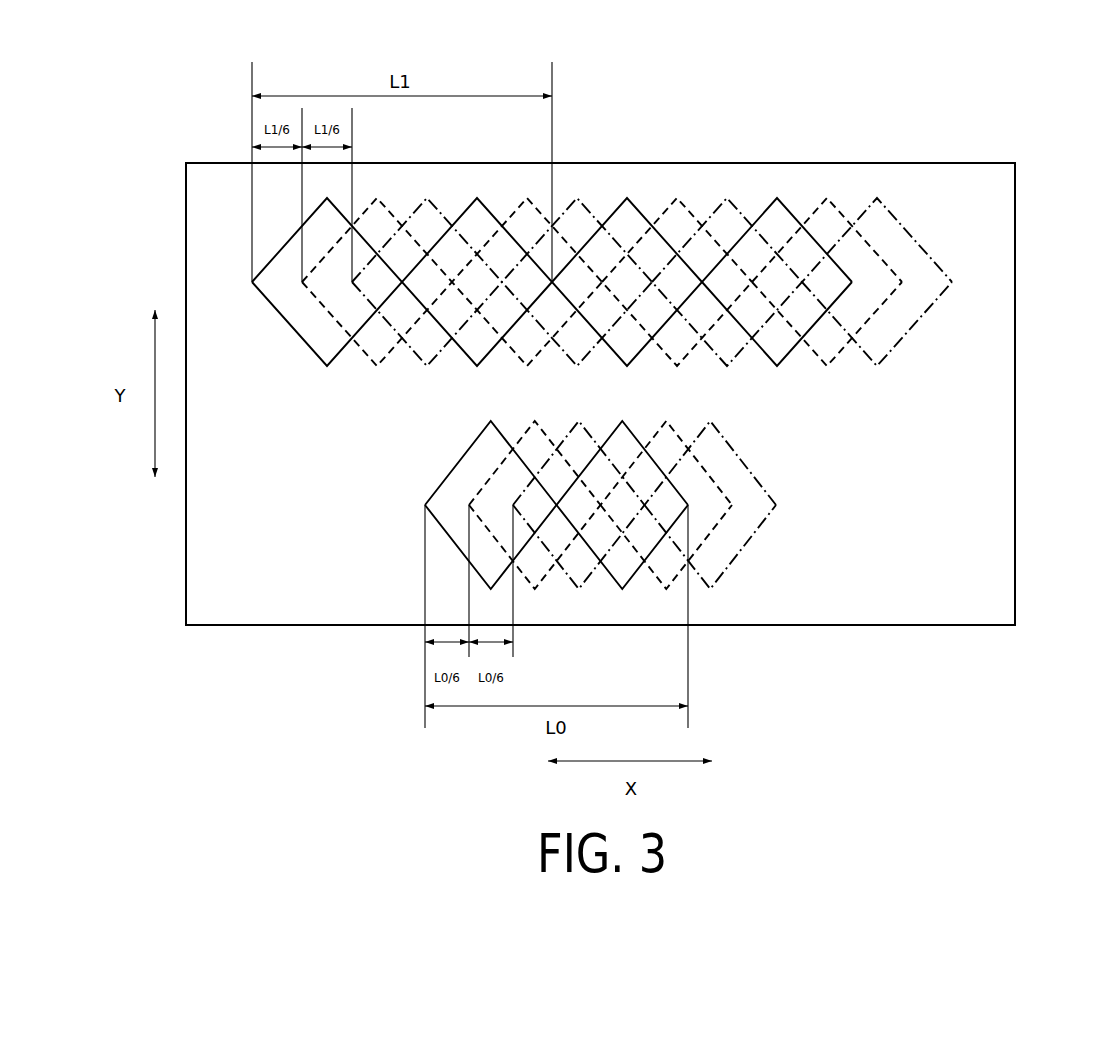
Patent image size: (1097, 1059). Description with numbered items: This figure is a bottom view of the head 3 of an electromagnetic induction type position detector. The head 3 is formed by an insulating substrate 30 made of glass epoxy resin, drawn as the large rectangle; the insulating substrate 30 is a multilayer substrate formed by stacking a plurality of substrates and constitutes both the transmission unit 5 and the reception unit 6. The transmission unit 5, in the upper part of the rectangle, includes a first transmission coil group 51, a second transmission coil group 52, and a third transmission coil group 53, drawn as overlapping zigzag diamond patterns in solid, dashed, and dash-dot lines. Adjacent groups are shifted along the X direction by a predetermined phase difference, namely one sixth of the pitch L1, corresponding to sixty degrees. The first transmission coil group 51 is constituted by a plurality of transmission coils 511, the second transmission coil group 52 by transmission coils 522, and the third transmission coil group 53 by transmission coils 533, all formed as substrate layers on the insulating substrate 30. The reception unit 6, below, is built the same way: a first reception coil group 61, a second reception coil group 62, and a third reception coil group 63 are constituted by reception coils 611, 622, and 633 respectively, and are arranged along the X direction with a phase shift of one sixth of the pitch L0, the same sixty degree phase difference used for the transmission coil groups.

The head 3 is at (640, 368).
The insulating substrate 30 is at (937, 163).
The transmission unit 5 is at (628, 273).
The first transmission coil group 51 is at (552, 265).
The second transmission coil group 52 is at (602, 269).
The third transmission coil group 53 is at (652, 273).
The transmission coil 511 is at (627, 197).
The transmission coil 522 is at (677, 197).
The transmission coil 533 is at (727, 197).
The reception unit 6 is at (630, 534).
The first reception coil group 61 is at (548, 546).
The second reception coil group 62 is at (617, 534).
The third reception coil group 63 is at (673, 536).
The reception coil 611 is at (624, 591).
The reception coil 622 is at (668, 592).
The reception coil 633 is at (711, 592).